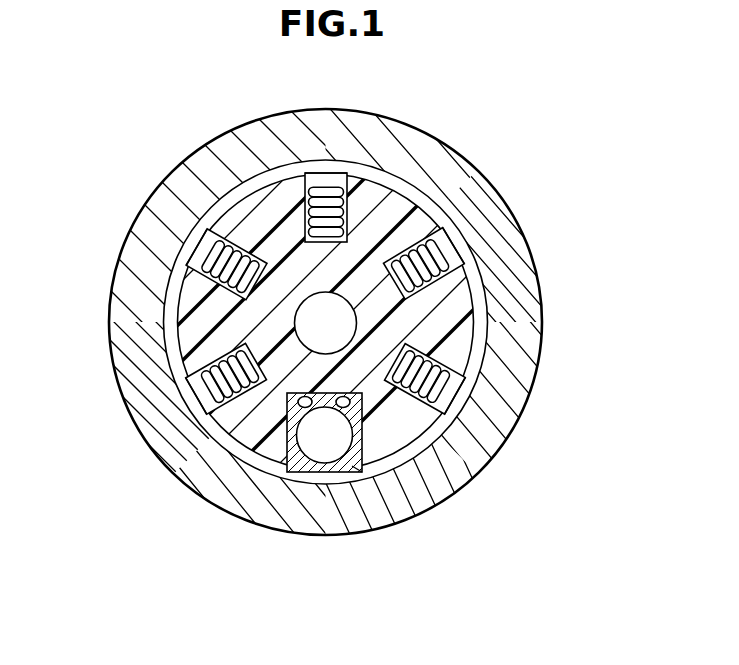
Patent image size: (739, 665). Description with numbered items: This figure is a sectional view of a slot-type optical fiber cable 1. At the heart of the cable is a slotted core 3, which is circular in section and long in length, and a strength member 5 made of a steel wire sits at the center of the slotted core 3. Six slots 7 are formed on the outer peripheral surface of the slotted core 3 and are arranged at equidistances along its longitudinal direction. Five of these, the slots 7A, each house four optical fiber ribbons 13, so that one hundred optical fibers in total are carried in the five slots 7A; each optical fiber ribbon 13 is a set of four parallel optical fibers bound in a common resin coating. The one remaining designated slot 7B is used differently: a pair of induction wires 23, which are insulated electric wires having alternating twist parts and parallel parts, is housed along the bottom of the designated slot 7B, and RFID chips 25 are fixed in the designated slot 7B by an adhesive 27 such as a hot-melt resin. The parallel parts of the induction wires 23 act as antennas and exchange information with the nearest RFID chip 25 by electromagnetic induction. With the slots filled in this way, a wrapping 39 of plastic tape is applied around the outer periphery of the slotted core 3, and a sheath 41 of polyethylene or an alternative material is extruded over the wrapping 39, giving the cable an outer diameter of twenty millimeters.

The optical fiber cable 1 is at (492, 162).
The slotted core 3 is at (467, 293).
The strength member 5 is at (342, 324).
The slots 7 is at (202, 250).
The slots 7A is at (316, 170).
The designated slot 7B is at (363, 405).
The optical fiber ribbon 13 is at (334, 190).
The pair of induction wires 23 is at (302, 409).
The RFID chip 25 is at (322, 461).
The adhesive 27 is at (353, 470).
The wrapping 39 is at (465, 256).
The sheath 41 is at (503, 226).